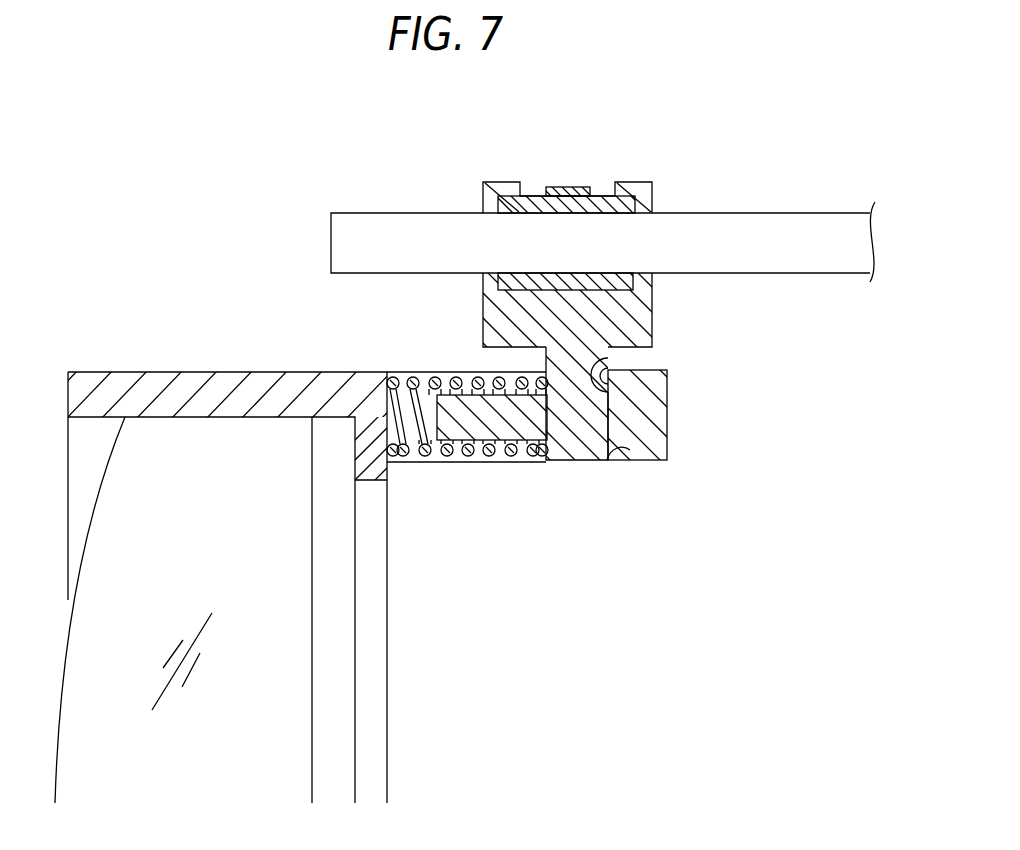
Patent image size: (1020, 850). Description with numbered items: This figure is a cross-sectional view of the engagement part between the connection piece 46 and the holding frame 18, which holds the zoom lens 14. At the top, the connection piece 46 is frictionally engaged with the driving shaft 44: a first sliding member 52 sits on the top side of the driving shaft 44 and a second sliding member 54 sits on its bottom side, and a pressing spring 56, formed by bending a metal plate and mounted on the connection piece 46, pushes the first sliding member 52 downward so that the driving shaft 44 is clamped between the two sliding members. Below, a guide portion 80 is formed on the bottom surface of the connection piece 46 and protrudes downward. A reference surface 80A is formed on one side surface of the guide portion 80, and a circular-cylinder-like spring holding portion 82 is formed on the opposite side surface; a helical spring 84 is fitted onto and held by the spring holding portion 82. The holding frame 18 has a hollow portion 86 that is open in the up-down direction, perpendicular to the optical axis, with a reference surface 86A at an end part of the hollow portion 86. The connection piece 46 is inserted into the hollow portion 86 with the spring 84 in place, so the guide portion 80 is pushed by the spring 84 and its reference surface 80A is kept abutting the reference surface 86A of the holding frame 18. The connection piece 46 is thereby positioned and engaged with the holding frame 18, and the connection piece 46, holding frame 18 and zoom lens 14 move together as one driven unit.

The zoom lens 14 is at (128, 530).
The holding frame 18 is at (225, 383).
The driving shaft 44 is at (747, 227).
The connection piece 46 is at (480, 303).
The first sliding member 52 is at (600, 196).
The second sliding member 54 is at (620, 280).
The pressing spring 56 is at (565, 187).
The guide portion 80 is at (576, 448).
The reference surface 80A is at (622, 448).
The spring holding portion 82 is at (500, 420).
The helical spring 84 is at (420, 455).
The hollow portion 86 is at (408, 368).
The reference surface 86A is at (609, 355).